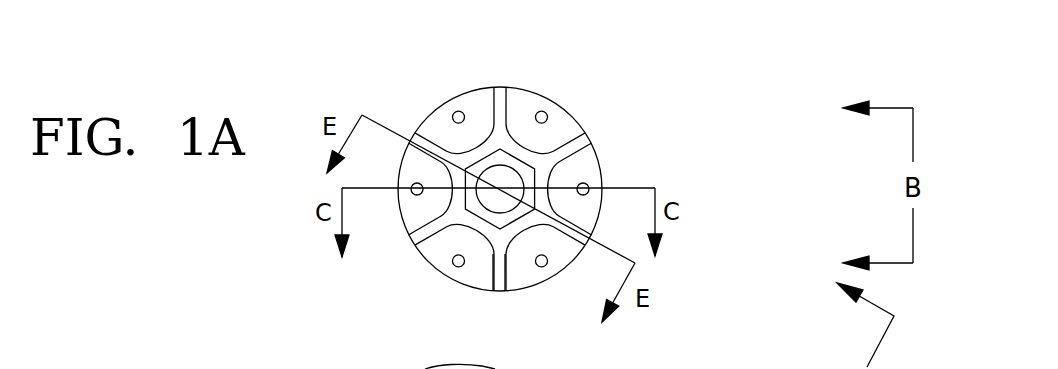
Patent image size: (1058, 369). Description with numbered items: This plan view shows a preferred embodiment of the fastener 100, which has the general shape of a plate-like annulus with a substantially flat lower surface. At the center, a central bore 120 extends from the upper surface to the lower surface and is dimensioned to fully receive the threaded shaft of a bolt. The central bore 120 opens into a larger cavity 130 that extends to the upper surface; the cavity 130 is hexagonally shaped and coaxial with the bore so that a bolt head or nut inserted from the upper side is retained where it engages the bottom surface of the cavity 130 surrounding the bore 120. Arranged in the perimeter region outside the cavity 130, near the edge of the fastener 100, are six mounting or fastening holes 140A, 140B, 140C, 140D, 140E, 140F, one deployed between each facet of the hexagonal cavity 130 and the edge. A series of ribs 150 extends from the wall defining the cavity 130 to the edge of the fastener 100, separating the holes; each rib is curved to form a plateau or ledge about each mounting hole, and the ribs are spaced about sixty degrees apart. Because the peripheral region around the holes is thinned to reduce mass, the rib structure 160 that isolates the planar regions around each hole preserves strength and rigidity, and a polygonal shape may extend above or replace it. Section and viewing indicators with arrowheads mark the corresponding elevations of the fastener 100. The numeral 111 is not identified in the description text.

The fastener 100 is at (622, 120).
The housing 111 is at (431, 365).
The central bore 120 is at (497, 185).
The cavity 130 is at (538, 136).
The mounting hole 140A is at (412, 185).
The mounting hole 140B is at (456, 112).
The mounting hole 140C is at (538, 111).
The mounting hole 140D is at (584, 183).
The mounting hole 140E is at (548, 263).
The mounting hole 140F is at (452, 260).
The ribs 150 is at (520, 121).
The rib structure 160 is at (502, 240).